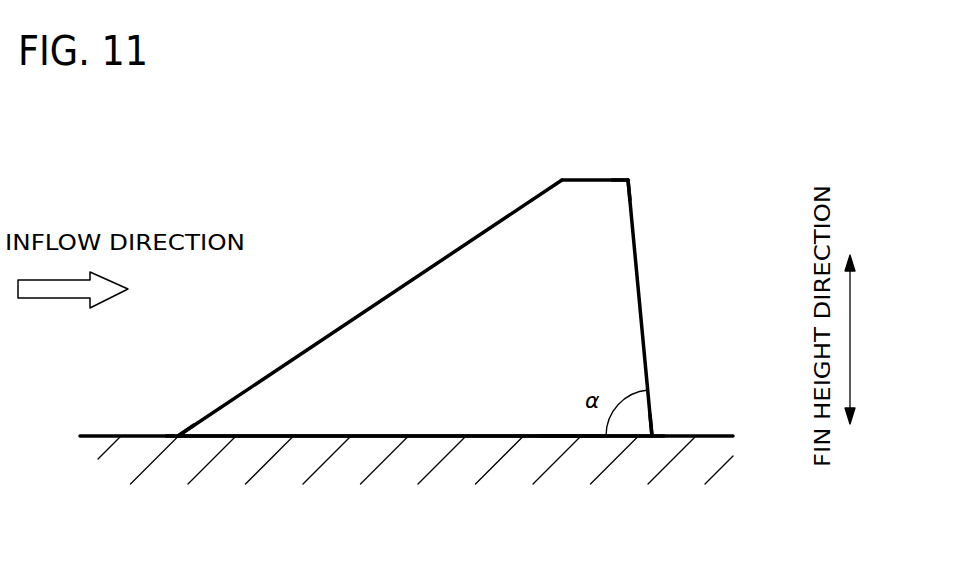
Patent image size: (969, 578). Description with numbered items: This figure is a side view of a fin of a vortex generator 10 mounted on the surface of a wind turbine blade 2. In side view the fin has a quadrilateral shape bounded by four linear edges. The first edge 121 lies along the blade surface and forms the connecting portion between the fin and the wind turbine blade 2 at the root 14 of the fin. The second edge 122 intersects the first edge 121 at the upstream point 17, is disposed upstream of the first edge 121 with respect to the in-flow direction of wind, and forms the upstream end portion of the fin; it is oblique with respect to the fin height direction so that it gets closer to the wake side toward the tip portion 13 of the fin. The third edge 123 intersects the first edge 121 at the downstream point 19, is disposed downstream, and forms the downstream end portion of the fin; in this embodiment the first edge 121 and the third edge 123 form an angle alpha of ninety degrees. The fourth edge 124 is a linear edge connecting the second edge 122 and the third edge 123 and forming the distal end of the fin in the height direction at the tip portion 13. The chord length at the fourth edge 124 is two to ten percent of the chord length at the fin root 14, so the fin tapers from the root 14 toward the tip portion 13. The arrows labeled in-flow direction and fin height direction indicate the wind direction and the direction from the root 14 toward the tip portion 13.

The wind turbine blade 2 is at (99, 436).
The fin 10 is at (296, 188).
The tip portion 13 is at (607, 180).
The root 14 is at (565, 437).
The front end of fin 17 is at (177, 434).
The rear end of fin 19 is at (655, 433).
The first edge 121 is at (436, 437).
The second edge 122 is at (347, 321).
The third edge 123 is at (638, 275).
The fourth edge 124 is at (577, 180).